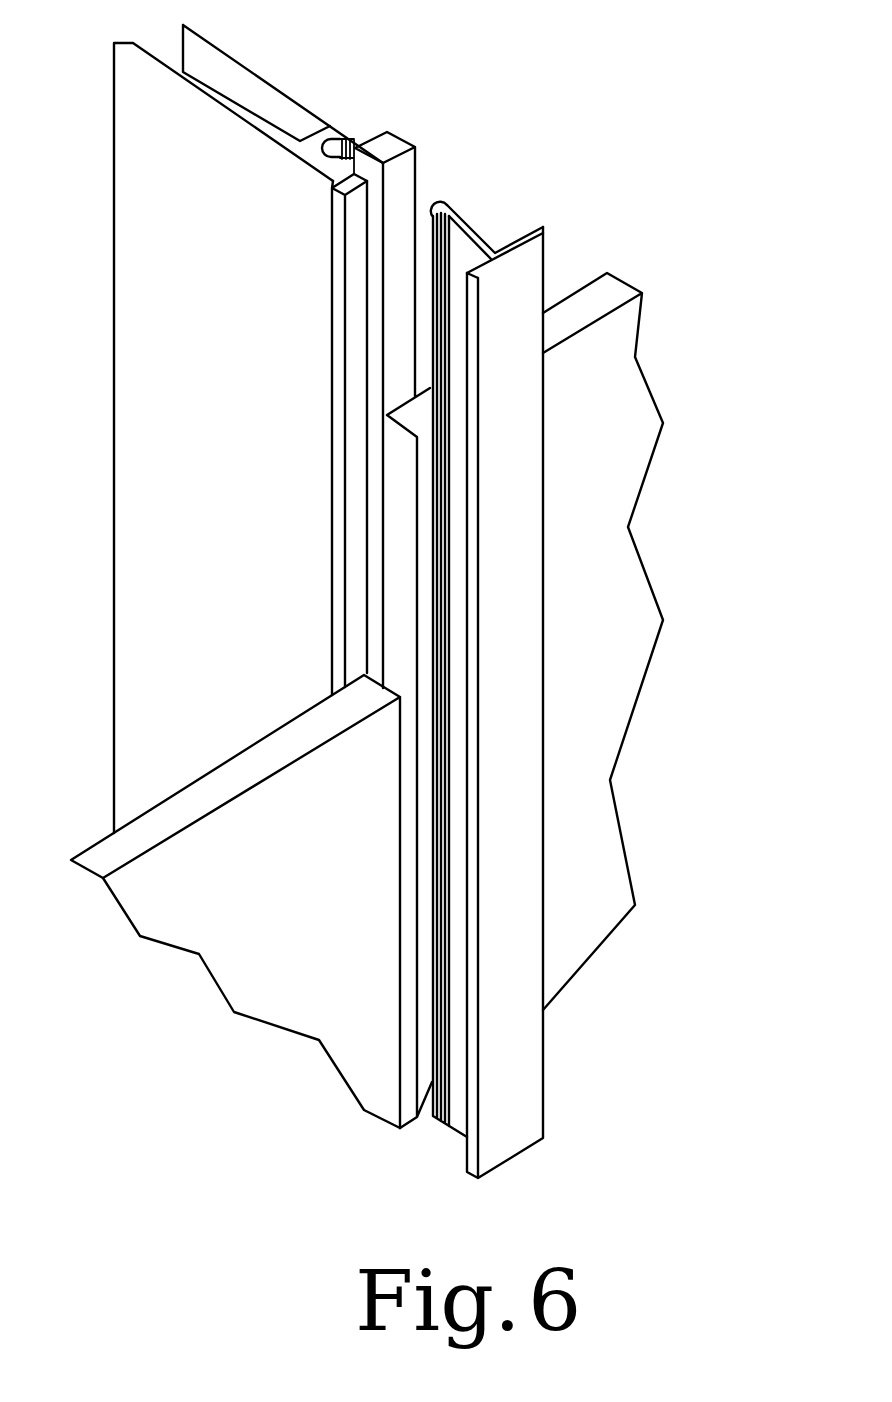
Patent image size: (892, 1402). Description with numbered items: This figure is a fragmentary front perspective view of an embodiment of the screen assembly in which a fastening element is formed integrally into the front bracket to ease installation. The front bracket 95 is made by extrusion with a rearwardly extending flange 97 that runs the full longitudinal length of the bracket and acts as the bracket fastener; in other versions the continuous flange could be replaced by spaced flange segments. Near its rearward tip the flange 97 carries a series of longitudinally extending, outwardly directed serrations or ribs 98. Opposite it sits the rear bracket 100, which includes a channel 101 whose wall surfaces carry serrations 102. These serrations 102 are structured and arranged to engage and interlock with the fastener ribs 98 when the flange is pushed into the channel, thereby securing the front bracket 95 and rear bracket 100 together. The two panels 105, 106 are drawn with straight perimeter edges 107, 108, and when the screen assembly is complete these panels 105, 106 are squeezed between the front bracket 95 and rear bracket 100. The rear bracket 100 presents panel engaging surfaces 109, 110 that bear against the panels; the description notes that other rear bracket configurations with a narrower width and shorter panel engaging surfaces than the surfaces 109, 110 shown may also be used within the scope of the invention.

The front bracket 95 is at (545, 487).
The rearwardly extending flange 97 is at (480, 241).
The serrations or ribs 98 is at (420, 213).
The rear bracket 100 is at (323, 105).
The channel 101 is at (376, 242).
The serrations 102 is at (352, 141).
The panel 105 is at (181, 929).
The panel 106 is at (620, 685).
The straight perimeter edge 107 is at (393, 873).
The straight perimeter edge 108 is at (401, 498).
The panel engaging surface 109 is at (360, 219).
The panel engaging surface 110 is at (412, 172).